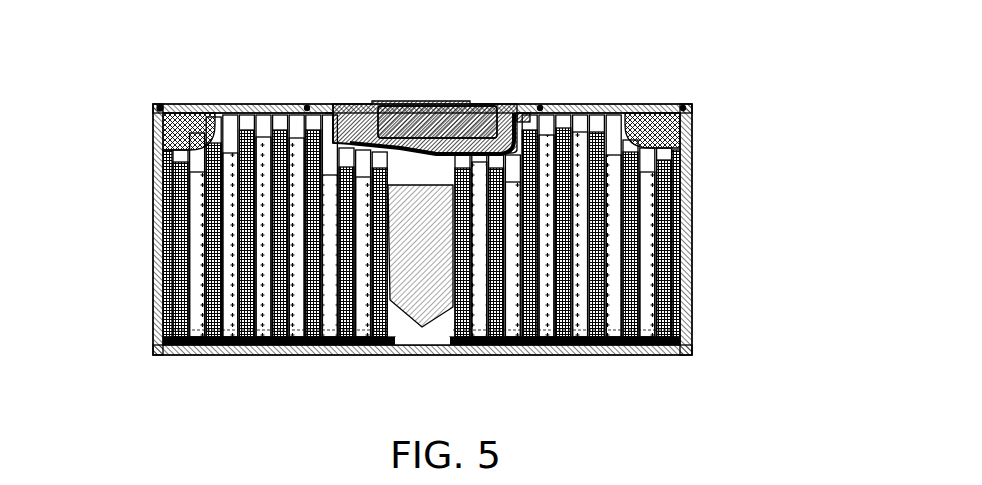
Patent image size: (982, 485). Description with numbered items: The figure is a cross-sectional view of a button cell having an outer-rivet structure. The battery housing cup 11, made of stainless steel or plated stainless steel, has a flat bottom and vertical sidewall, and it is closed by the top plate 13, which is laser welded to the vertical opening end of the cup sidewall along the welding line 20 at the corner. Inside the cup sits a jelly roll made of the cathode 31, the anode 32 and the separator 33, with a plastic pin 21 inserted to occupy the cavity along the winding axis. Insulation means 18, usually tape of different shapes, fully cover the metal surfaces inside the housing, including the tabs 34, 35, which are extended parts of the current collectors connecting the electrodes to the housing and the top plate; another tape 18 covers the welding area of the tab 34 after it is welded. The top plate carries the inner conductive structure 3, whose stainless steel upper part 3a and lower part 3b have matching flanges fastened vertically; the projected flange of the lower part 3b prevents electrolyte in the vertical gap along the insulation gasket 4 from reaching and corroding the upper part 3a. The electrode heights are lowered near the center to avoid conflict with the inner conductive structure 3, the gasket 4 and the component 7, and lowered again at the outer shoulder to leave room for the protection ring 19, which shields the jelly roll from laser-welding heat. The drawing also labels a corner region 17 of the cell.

The inner conductive structure 3 is at (457, 130).
The upper part 3a is at (408, 128).
The lower part 3b is at (430, 135).
The insulation gasket 4 is at (337, 106).
The inner conductive structure component 7 is at (510, 108).
The battery housing cup 11 is at (198, 347).
The top plate 13 is at (560, 105).
The corner insulating portion 17 is at (677, 105).
The insulation means 18 is at (237, 105).
The protection ring 19 is at (160, 138).
The welding line 20 is at (158, 105).
The pin 21 is at (430, 280).
The cathode 31 is at (690, 183).
The anode 32 is at (690, 210).
The separator 33 is at (690, 233).
The tab 34 is at (436, 142).
The tab 35 is at (403, 343).